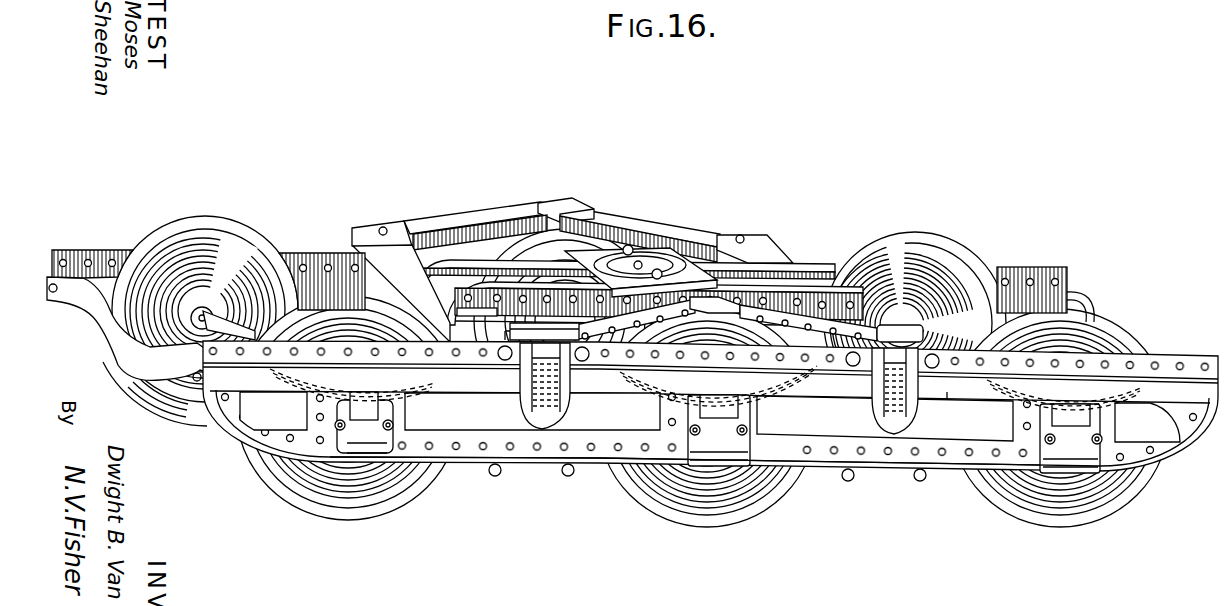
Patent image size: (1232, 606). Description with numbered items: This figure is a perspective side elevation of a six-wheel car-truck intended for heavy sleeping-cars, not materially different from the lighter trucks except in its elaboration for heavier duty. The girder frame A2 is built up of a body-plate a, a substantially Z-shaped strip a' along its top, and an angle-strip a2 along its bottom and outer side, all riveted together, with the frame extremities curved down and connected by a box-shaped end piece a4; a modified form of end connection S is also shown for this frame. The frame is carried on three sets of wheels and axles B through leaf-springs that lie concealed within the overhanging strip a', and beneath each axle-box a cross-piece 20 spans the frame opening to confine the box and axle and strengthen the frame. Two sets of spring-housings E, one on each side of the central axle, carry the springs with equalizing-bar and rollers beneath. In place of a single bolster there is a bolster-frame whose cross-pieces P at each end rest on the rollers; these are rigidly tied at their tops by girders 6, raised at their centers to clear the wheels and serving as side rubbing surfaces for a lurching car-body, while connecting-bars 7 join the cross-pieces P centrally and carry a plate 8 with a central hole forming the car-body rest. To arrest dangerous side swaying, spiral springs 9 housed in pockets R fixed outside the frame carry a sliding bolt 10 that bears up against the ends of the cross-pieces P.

The axles B is at (204, 316).
The end connection S is at (97, 350).
The spring-housings E is at (400, 301).
The cross-piece 20 is at (362, 468).
The tie-bars or girders 6 is at (482, 220).
The cross-pieces P is at (390, 250).
The connecting-bars 7 is at (456, 315).
The plate 8 is at (658, 252).
The frame A2 is at (1002, 265).
The Z strip or plate a' is at (885, 416).
The pockets R is at (562, 407).
The spiral springs 9 is at (517, 403).
The sliding bolt 10 is at (523, 365).
The body-plate a is at (571, 340).
The box-shaped end piece a4 is at (1090, 300).
The angle-strip a2 is at (944, 472).